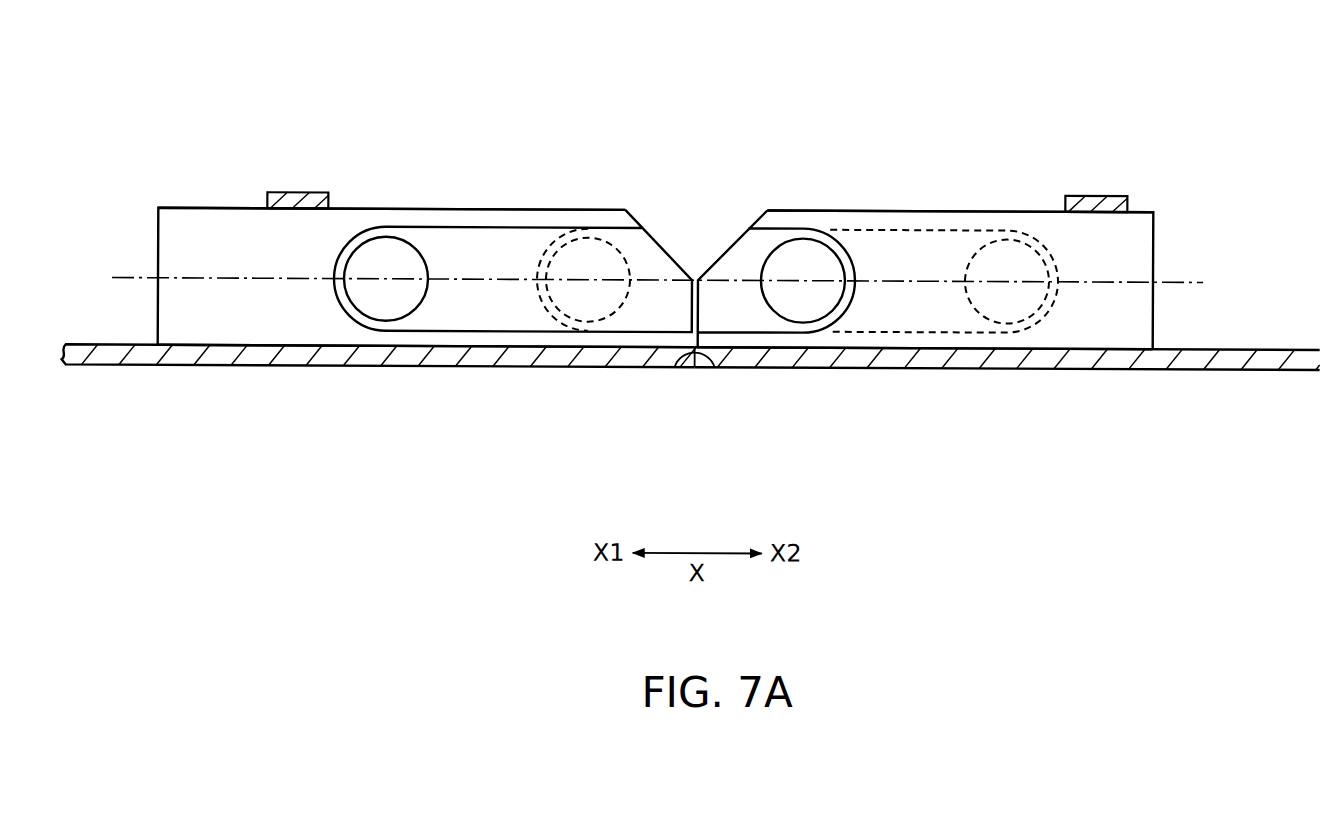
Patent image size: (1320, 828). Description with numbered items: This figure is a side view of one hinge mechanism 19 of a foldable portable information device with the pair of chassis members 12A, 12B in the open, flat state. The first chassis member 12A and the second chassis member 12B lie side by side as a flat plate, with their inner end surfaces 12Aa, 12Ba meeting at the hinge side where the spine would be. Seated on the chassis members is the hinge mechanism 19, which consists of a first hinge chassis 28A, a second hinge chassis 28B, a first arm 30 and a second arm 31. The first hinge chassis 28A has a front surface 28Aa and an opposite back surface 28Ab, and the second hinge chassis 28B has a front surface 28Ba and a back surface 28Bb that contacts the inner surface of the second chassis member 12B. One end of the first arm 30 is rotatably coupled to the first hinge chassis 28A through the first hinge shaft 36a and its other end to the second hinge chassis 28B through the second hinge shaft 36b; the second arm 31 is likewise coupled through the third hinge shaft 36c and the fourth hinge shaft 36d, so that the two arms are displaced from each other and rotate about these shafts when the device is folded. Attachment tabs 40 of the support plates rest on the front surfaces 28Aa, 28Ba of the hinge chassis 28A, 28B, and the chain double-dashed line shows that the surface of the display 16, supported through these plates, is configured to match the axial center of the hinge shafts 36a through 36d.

The hinge mechanism 19 is at (196, 128).
The first chassis member 12A is at (135, 369).
The second chassis member 12B is at (1227, 369).
The inner end surface 12Aa is at (715, 367).
The inner end surface 12Ba is at (676, 367).
The display 16 is at (1170, 283).
The first hinge chassis 28A is at (255, 209).
The second hinge chassis 28B is at (1138, 209).
The front surface 28Aa is at (527, 210).
The back surface 28Ab is at (240, 348).
The front surface 28Ba is at (852, 210).
The back surface 28Bb is at (1128, 348).
The first arm 30 is at (480, 226).
The second arm 31 is at (898, 227).
The first hinge shaft 36a is at (384, 238).
The second hinge shaft 36b is at (803, 238).
The third hinge shaft 36c is at (588, 229).
The fourth hinge shaft 36d is at (1008, 229).
The attachment tab 40 is at (300, 194).